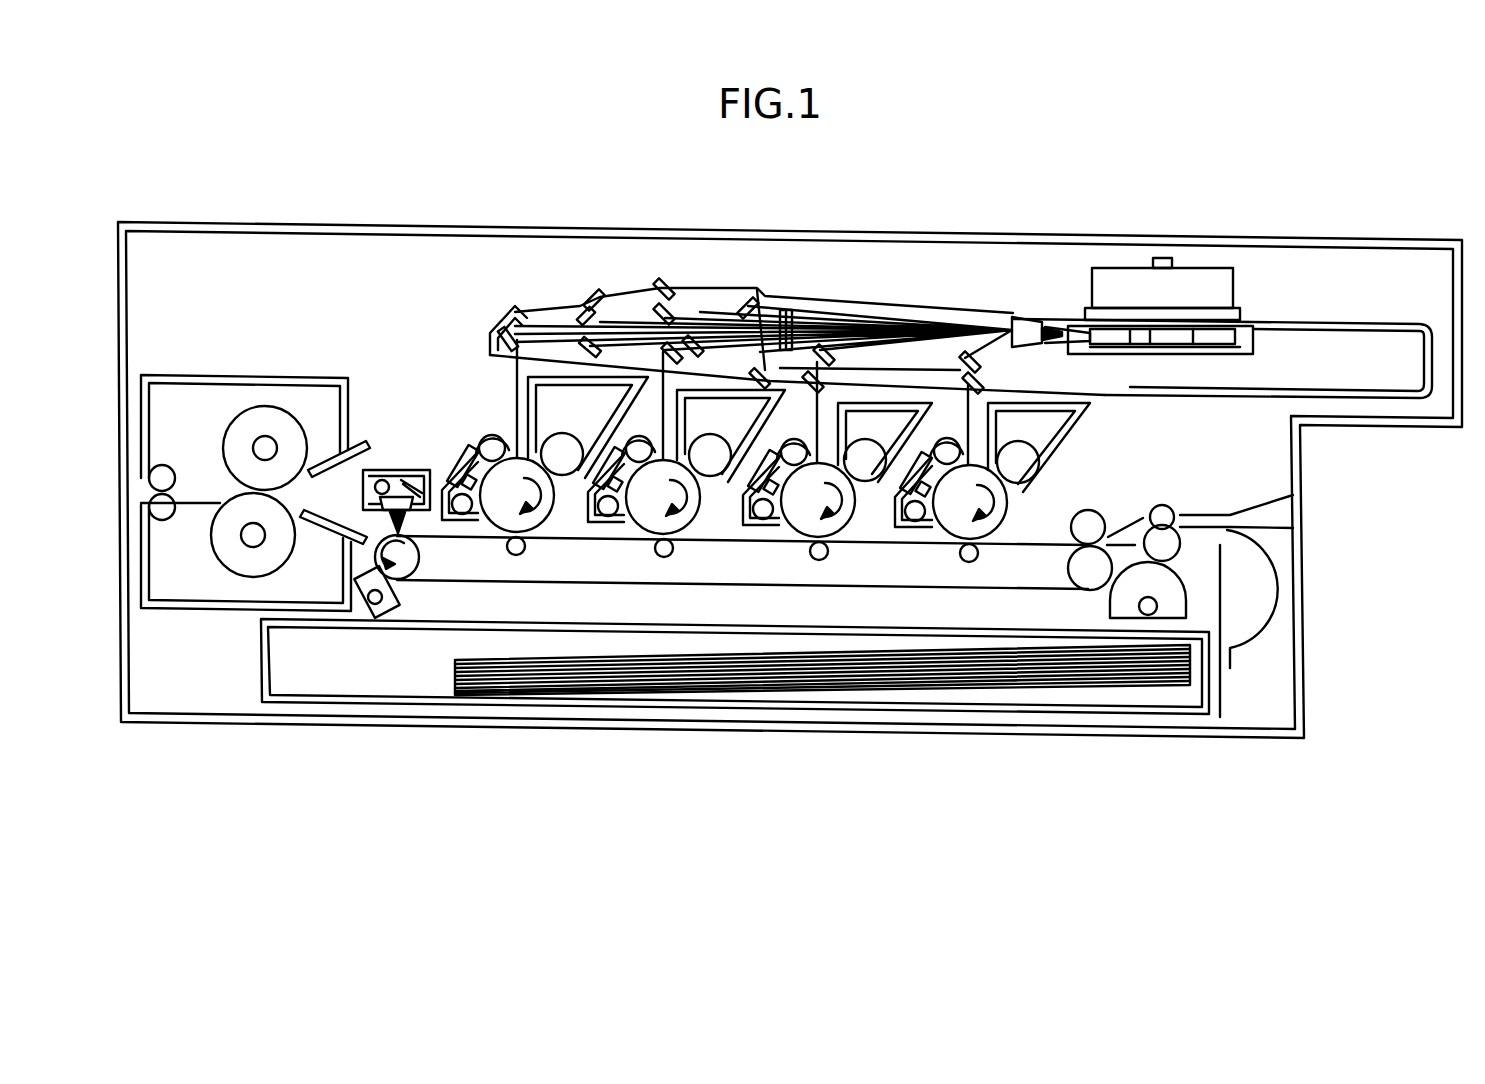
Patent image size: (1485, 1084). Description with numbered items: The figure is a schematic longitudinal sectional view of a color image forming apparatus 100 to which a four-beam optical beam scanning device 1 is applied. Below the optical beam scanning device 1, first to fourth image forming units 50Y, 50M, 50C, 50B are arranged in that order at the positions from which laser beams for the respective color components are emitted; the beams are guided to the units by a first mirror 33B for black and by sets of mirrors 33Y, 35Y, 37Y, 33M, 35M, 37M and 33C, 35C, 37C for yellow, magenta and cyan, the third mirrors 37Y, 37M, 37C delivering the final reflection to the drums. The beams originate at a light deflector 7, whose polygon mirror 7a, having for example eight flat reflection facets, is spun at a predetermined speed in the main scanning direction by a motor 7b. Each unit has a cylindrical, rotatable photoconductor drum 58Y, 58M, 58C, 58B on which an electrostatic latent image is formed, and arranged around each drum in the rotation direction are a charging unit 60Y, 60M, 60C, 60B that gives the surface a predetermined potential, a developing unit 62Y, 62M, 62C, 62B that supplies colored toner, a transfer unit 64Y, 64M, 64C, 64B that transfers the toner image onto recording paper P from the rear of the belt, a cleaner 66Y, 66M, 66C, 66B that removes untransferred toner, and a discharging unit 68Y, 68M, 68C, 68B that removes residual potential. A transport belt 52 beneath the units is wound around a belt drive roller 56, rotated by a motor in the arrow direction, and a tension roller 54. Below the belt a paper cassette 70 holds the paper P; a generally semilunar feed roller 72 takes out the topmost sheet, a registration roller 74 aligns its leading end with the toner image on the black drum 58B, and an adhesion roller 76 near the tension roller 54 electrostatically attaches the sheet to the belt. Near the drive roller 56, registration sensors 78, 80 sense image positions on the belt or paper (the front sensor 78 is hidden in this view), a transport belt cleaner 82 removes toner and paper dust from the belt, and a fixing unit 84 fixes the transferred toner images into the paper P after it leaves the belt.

The image forming apparatus 100 is at (1226, 240).
The multibeam optical beam scanning device 1 is at (1107, 395).
The light deflector 7 is at (1322, 316).
The polygon mirror 7a is at (1253, 350).
The motor 7b is at (1236, 300).
The first mirror 33B is at (503, 322).
The mirror 33C is at (598, 322).
The mirror 33M is at (660, 300).
The mirror 33Y is at (765, 322).
The mirror 35C is at (583, 306).
The mirror 35M is at (738, 355).
The mirror 35Y is at (782, 320).
The third mirror 37C is at (678, 343).
The third mirror 37M is at (838, 357).
The third mirror 37Y is at (980, 365).
The image forming unit 50B is at (600, 425).
The image forming unit 50C is at (739, 440).
The image forming unit 50M is at (905, 442).
The image forming unit 50Y is at (1055, 447).
The transport belt 52 is at (1030, 543).
The tension roller 54 is at (1085, 578).
The belt drive roller 56 is at (408, 578).
The photoconductor drum 58B is at (517, 530).
The photoconductor drum 58C is at (676, 530).
The photoconductor drum 58M is at (832, 532).
The photoconductor drum 58Y is at (985, 534).
The charging unit 60B is at (492, 435).
The charging unit 60C is at (636, 437).
The charging unit 60M is at (798, 440).
The charging unit 60Y is at (950, 437).
The developing unit 62B is at (562, 478).
The developing unit 62C is at (712, 480).
The developing unit 62M is at (868, 484).
The developing unit 62Y is at (1040, 464).
The transfer unit 64B is at (452, 530).
The transfer unit 64C is at (606, 522).
The transfer unit 64M is at (770, 524).
The transfer unit 64Y is at (920, 526).
The cleaner 66B is at (508, 553).
The cleaner 66C is at (658, 556).
The cleaner 66M is at (813, 559).
The cleaner 66Y is at (961, 561).
The discharging unit 68B is at (455, 470).
The discharging unit 68C is at (606, 474).
The discharging unit 68M is at (761, 477).
The discharging unit 68Y is at (935, 470).
The paper cassette 70 is at (1160, 712).
The feed roller 72 is at (1165, 590).
The registration roller 74 is at (1164, 505).
The adhesion roller 76 is at (1090, 517).
The registration sensor 78 is at (402, 467).
The registration sensor 80 is at (400, 470).
The transport belt cleaner 82 is at (372, 612).
The fixing unit 84 is at (197, 590).
The recording paper P is at (1046, 690).